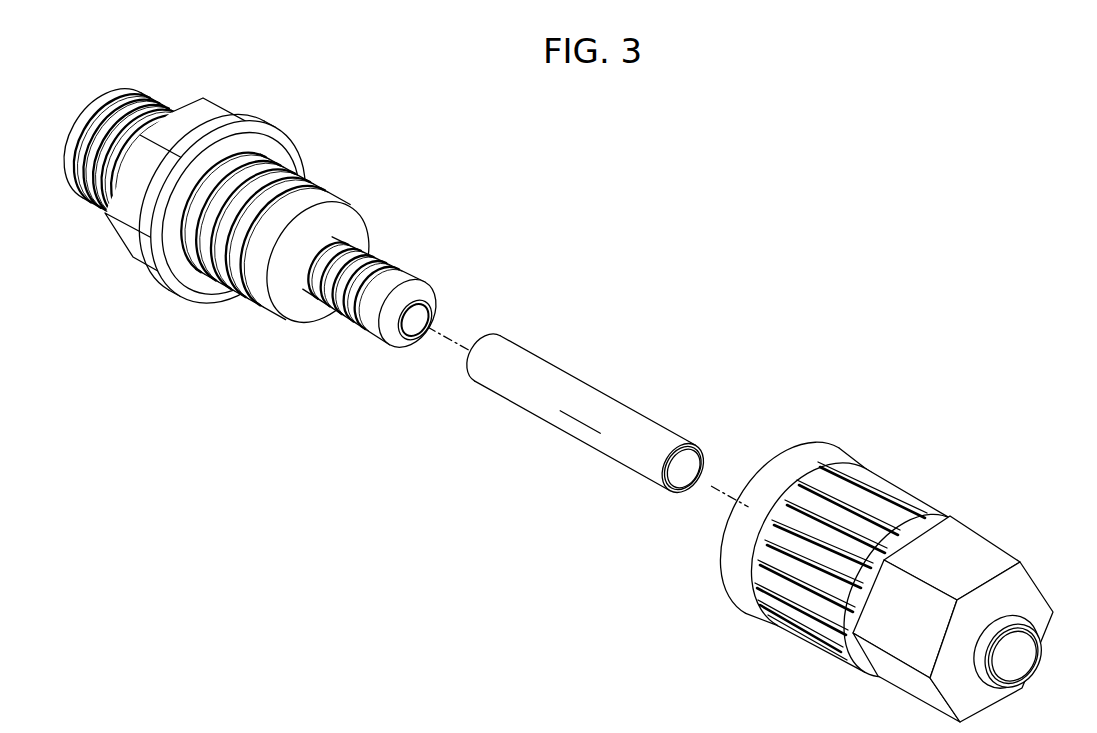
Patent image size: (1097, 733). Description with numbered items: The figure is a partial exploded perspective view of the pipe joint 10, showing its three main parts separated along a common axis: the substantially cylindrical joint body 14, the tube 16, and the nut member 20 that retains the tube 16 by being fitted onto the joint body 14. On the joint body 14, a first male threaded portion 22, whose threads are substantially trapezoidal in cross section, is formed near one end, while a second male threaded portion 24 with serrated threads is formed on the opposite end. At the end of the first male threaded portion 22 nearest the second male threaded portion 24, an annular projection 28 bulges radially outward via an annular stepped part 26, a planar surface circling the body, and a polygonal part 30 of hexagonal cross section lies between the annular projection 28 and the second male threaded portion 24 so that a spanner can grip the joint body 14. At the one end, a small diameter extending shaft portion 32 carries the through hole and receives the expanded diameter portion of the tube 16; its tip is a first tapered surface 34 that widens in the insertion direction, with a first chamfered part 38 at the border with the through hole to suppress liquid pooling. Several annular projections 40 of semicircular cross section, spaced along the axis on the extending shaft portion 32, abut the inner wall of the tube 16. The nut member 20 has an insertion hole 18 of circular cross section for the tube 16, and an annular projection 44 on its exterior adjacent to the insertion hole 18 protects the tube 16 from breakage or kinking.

The pipe joint 10 is at (678, 147).
The joint body 14 is at (125, 262).
The tube 16 is at (640, 400).
The insertion hole 18 is at (1002, 658).
The nut member 20 is at (903, 476).
The first male threaded portion 22 is at (307, 181).
The second male threaded portion 24 is at (72, 196).
The annular stepped part 26 is at (283, 150).
The annular projection 28 is at (253, 129).
The polygonal part 30 is at (214, 97).
The small diameter extending shaft portion 32 is at (330, 334).
The first tapered surface 34 is at (418, 291).
The first chamfered part 38 is at (428, 309).
The annular projections 40 is at (382, 253).
The annular projection 44 is at (1011, 615).